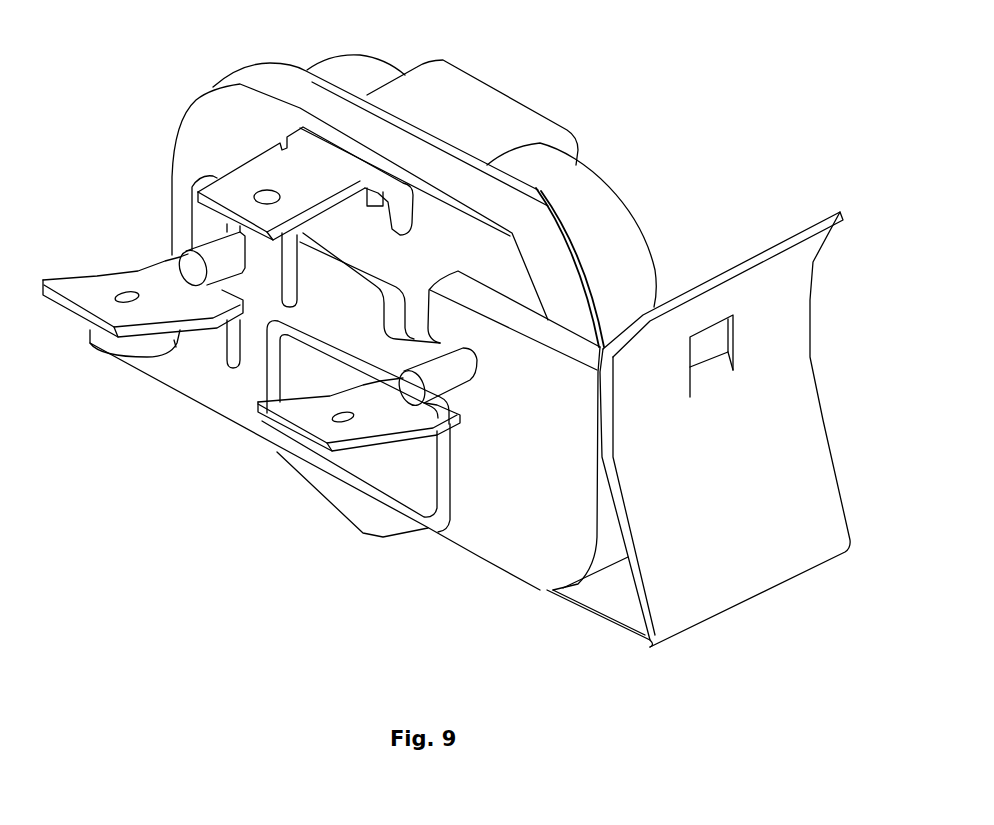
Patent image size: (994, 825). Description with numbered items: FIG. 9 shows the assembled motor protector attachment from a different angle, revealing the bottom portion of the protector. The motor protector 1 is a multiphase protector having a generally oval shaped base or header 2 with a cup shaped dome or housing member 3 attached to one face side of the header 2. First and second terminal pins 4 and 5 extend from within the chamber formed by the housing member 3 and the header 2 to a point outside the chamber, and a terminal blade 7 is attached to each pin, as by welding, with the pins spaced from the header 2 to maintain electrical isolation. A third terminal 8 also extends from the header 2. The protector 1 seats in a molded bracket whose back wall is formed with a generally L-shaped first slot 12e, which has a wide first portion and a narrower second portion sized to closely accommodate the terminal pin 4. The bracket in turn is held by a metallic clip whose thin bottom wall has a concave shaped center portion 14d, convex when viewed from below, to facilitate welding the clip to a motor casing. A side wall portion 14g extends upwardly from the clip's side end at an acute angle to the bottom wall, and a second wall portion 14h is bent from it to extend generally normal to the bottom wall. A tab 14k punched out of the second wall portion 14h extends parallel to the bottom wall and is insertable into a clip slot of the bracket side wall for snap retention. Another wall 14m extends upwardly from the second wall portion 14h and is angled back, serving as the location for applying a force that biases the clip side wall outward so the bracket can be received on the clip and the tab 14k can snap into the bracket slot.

The motor protector 1 is at (478, 105).
The header 2 is at (257, 83).
The housing member 3 is at (598, 210).
The first terminal pin 4 is at (223, 259).
The second terminal pin 5 is at (455, 377).
The terminal blade 7 is at (109, 284).
The third terminal 8 is at (305, 172).
The first slot 12e is at (415, 284).
The concave shaped center portion 14d is at (340, 497).
The side wall portion 14g is at (812, 478).
The second wall portion 14h is at (798, 325).
The tab 14k is at (703, 369).
The wall 14m is at (808, 244).